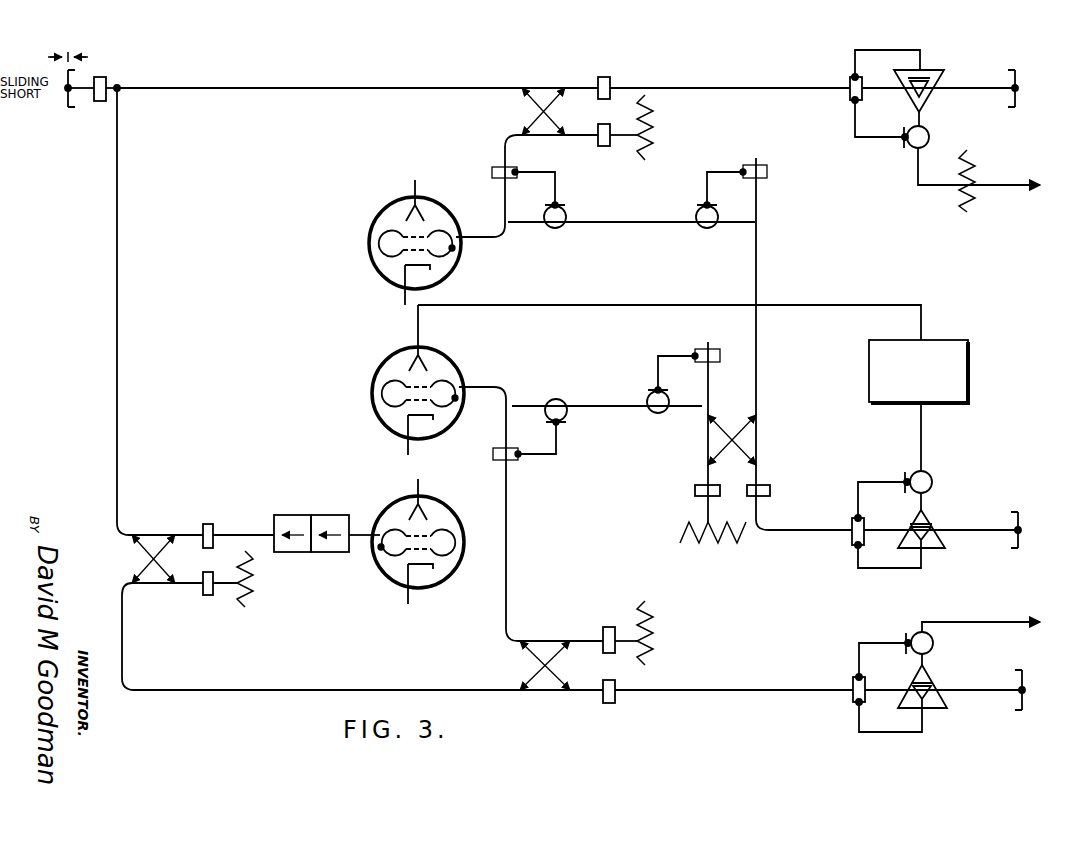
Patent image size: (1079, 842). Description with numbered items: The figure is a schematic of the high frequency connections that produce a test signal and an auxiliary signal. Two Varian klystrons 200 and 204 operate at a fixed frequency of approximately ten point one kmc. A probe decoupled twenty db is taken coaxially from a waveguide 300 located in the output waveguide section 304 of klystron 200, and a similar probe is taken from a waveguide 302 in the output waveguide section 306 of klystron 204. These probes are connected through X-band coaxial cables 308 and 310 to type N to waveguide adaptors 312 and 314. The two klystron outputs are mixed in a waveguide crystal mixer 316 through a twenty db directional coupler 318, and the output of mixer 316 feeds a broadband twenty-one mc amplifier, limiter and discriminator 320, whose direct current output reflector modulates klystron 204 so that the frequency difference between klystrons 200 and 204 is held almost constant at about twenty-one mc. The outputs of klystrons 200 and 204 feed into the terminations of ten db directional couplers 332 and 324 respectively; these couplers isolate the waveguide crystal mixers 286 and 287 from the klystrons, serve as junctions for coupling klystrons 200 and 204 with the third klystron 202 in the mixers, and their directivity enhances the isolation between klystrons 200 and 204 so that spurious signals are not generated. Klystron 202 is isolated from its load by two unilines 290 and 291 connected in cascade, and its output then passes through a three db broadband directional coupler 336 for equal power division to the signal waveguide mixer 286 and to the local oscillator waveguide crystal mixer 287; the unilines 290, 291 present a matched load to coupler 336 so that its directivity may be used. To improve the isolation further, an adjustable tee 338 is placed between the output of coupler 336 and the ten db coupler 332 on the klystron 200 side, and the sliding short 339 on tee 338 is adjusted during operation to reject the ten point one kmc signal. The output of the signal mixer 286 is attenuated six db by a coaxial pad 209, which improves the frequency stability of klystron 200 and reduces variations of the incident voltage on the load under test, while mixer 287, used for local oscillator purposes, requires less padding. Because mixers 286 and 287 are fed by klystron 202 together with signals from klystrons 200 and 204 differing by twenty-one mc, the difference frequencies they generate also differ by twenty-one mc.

The sliding short 339 is at (72, 53).
The adjustable tee 338 is at (110, 84).
The 3 db broadband directional coupler 336 is at (150, 545).
The 10 db directional coupler 332 is at (541, 98).
The V280 output waveguide section 304 is at (503, 148).
The probe waveguide 300 is at (557, 185).
The X-band coaxial cable 308 is at (600, 221).
The type N to waveguide adaptor 312 is at (718, 170).
The signal waveguide crystal mixer 286 is at (900, 50).
The 6 db coaxial pad 209 is at (967, 197).
The V280 klystron 200 is at (387, 207).
The V280 klystron 204 is at (387, 355).
The 2K45 klystron 202 is at (402, 500).
The probe waveguide 302 is at (558, 450).
The X-band coaxial cable 310 is at (612, 406).
The V280 output waveguide section 306 is at (507, 518).
The type N to waveguide adaptor 314 is at (660, 353).
The 20 db directional coupler 318 is at (750, 438).
The amplifier, limiter, and discriminator 320 is at (973, 367).
The waveguide crystal mixer 316 is at (923, 508).
The 10 db directional coupler 324 is at (542, 650).
The local oscillator waveguide crystal mixer 287 is at (935, 674).
The uniline 291 is at (295, 553).
The uniline 290 is at (333, 553).